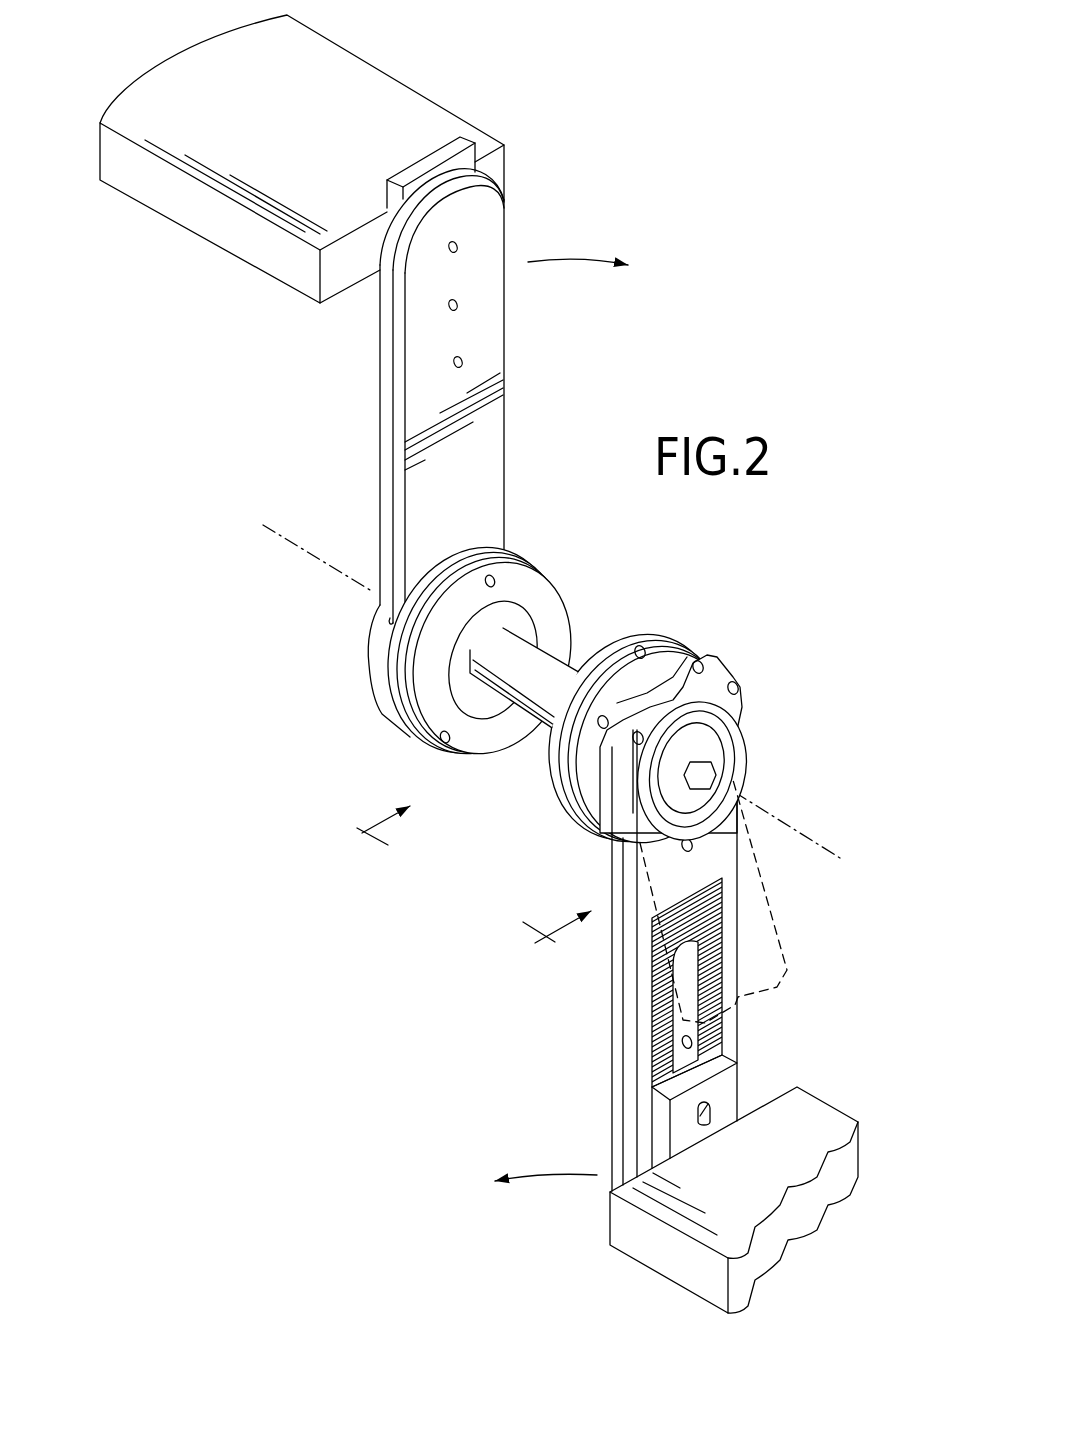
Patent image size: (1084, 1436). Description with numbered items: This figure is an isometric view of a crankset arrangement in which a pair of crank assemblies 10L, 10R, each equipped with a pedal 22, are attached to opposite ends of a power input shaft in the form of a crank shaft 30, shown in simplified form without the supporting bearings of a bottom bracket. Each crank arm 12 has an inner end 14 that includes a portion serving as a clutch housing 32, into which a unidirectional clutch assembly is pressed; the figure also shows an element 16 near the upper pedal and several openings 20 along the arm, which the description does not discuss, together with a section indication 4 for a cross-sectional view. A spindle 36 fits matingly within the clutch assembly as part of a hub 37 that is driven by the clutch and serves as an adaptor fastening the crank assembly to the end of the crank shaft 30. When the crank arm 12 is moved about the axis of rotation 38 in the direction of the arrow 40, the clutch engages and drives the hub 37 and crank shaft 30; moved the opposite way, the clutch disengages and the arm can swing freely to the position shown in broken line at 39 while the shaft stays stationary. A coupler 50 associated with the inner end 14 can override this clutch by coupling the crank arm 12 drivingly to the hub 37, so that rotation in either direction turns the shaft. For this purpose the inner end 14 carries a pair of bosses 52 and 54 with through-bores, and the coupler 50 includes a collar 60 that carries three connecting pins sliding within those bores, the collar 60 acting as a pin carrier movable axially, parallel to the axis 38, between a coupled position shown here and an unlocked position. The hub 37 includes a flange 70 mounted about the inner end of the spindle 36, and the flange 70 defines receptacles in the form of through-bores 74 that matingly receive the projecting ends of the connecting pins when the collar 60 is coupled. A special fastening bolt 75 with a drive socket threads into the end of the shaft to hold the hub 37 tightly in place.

The pedal 22 is at (357, 85).
The mounting bracket 16 is at (432, 184).
The crank arm 12 is at (505, 419).
The left crank assembly 10L is at (376, 463).
The right crank assembly 10R is at (606, 1105).
The holes 20 is at (462, 360).
The arrow 40 is at (583, 258).
The collar 60 is at (493, 551).
The coupler 50 is at (521, 546).
The flange 70 is at (537, 574).
The spindle 36 is at (475, 633).
The hub 37 is at (567, 592).
The crank shaft 30 is at (565, 672).
The boss 54 is at (707, 693).
The inner end 14 is at (383, 718).
The fastening bolt 75 is at (723, 757).
The axis of rotation 38 is at (827, 845).
The through-bores 74 is at (440, 744).
The boss 52 is at (618, 747).
The clutch housing 32 is at (600, 773).
The broken-line position 39 is at (780, 937).
The section line 4- 4 is at (464, 885).